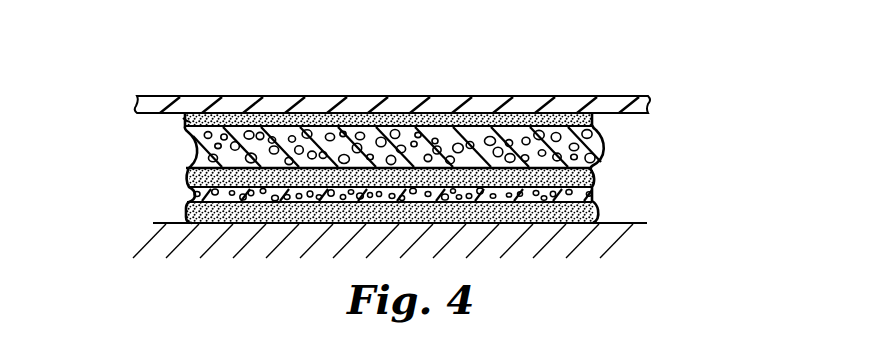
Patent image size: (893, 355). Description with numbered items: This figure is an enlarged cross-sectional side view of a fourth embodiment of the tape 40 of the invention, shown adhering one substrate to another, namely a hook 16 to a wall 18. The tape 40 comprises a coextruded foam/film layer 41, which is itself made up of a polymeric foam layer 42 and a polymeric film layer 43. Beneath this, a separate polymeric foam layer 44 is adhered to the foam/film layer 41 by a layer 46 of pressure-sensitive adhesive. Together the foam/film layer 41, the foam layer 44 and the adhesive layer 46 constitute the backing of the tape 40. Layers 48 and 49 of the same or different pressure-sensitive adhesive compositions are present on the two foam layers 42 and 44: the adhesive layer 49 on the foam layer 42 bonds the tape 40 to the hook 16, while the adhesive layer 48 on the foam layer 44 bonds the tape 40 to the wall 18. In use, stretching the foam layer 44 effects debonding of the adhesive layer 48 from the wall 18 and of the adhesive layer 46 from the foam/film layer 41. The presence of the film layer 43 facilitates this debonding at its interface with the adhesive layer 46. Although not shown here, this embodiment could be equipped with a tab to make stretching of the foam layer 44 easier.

The hook 16 is at (404, 111).
The wall 18 is at (622, 223).
The tape 40 is at (695, 123).
The coextruded foam/film layer 41 is at (187, 128).
The polymeric foam layer 42 is at (600, 134).
The polymeric film layer 43 is at (592, 167).
The polymeric foam layer 44 is at (597, 195).
The pressure-sensitive adhesive layer 46 is at (188, 178).
The pressure-sensitive adhesive layer 48 is at (187, 212).
The pressure-sensitive adhesive layer 49 is at (184, 122).